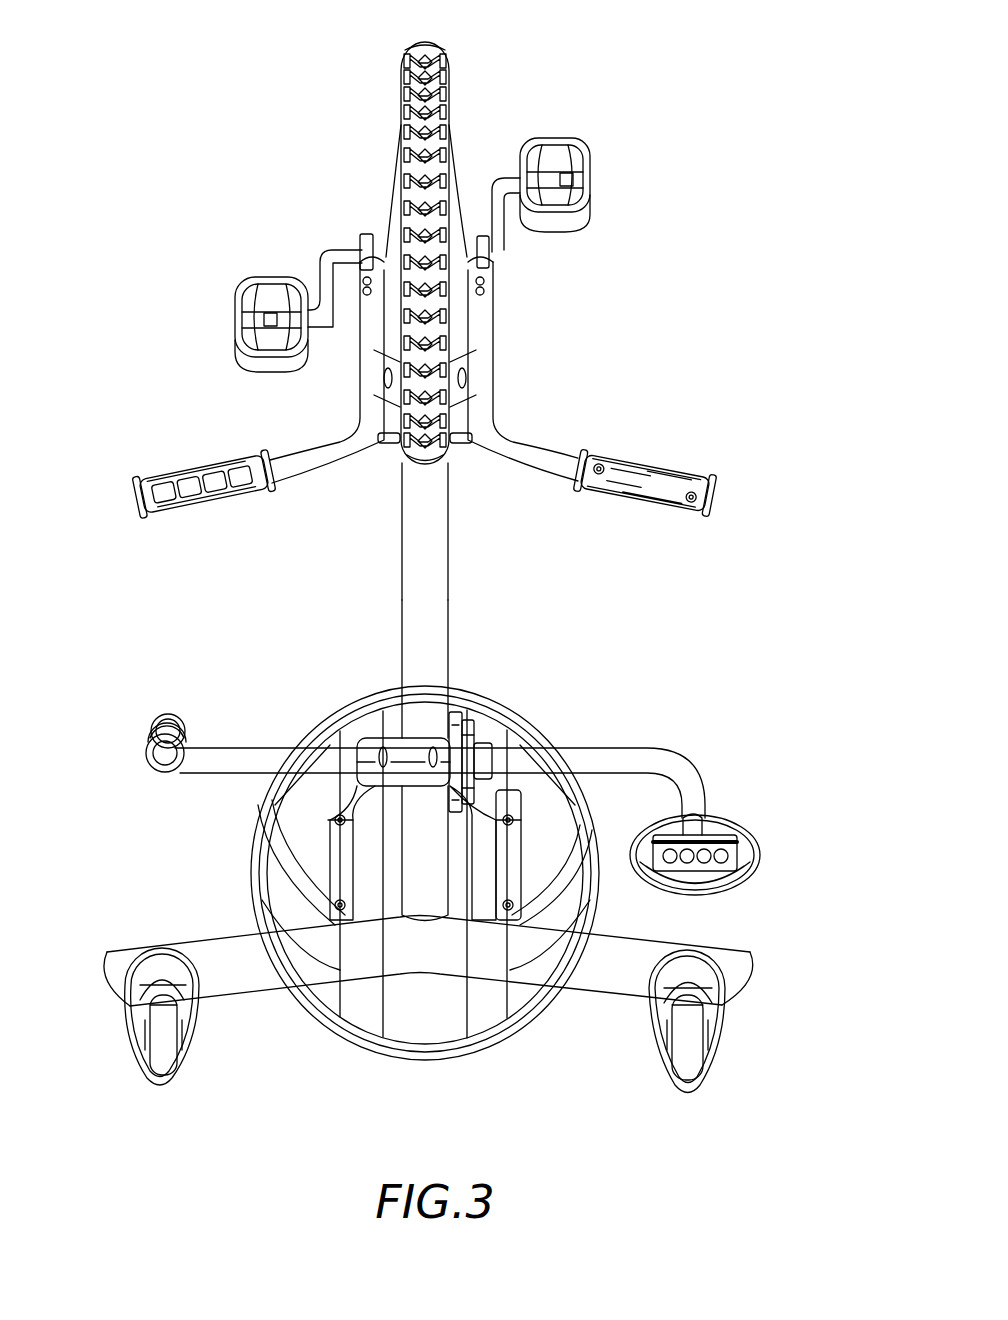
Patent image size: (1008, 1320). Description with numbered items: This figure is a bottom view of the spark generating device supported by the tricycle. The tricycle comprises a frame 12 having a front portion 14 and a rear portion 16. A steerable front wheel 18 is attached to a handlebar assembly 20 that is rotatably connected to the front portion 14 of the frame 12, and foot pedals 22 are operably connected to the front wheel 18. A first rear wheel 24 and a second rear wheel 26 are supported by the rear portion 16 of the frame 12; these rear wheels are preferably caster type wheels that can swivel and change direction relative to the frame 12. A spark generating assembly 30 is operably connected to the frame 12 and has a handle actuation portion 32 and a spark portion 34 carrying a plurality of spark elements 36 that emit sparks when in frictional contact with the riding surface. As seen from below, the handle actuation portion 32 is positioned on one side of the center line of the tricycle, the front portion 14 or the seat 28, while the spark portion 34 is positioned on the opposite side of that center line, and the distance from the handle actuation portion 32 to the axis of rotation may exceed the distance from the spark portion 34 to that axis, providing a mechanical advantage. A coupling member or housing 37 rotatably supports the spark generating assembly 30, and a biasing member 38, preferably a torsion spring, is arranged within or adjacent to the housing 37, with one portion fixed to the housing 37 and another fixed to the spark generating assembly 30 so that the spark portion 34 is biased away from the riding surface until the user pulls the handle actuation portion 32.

The frame 12 is at (462, 645).
The front portion 14 is at (452, 545).
The rear portion 16 is at (258, 980).
The steerable front wheel 18 is at (373, 82).
The handlebar assembly 20 is at (725, 221).
The foot pedals 22 is at (560, 123).
The first rear wheel 24 is at (149, 1070).
The second rear wheel 26 is at (697, 1075).
The seat 28 is at (486, 1030).
The spark generating assembly 30 is at (265, 735).
The handle actuation portion 32 is at (130, 748).
The spark portion 34 is at (769, 846).
The spark elements 36 is at (722, 866).
The housing 37 is at (406, 748).
The biasing member 38 is at (475, 732).